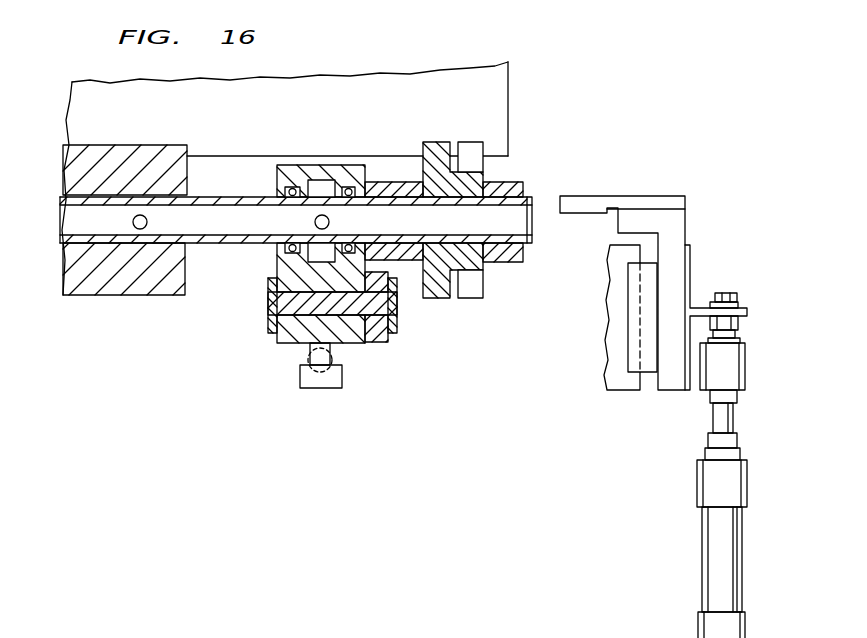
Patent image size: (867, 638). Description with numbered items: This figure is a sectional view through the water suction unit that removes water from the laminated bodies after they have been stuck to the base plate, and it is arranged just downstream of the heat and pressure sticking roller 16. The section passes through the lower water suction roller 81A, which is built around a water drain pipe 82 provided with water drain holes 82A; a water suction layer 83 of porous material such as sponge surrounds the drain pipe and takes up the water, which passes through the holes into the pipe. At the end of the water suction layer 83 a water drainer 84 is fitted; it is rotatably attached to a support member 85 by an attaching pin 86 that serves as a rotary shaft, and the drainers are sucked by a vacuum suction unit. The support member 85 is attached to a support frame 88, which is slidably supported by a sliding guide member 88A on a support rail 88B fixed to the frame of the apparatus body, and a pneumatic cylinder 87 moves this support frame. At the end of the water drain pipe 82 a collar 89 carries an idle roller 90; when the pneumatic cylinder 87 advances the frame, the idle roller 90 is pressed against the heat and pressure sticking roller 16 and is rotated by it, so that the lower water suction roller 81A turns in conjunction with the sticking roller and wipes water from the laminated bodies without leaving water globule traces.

The heat and pressure sticking roller 16 is at (495, 128).
The water suction layer 83 is at (162, 162).
The lower water suction roller 81A is at (148, 306).
The water drain pipe 82 is at (213, 197).
The water drain holes 82A is at (322, 215).
The collar 89 is at (385, 188).
The idle roller 90 is at (455, 305).
The attaching pin 86 is at (392, 305).
The water drainer 84 is at (295, 330).
The support member 85 is at (375, 330).
The support frame 88 is at (581, 206).
The sliding guide member 88A is at (632, 280).
The support rail 88B is at (618, 318).
The pneumatic cylinder 87 is at (712, 520).